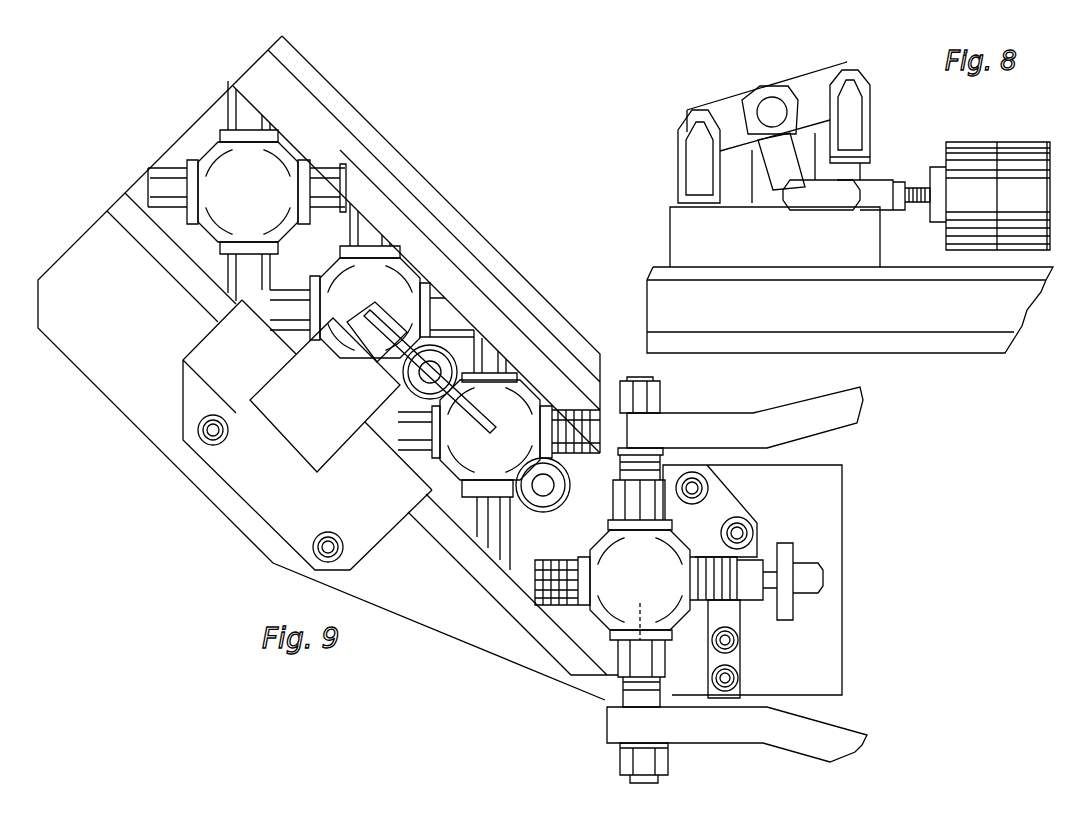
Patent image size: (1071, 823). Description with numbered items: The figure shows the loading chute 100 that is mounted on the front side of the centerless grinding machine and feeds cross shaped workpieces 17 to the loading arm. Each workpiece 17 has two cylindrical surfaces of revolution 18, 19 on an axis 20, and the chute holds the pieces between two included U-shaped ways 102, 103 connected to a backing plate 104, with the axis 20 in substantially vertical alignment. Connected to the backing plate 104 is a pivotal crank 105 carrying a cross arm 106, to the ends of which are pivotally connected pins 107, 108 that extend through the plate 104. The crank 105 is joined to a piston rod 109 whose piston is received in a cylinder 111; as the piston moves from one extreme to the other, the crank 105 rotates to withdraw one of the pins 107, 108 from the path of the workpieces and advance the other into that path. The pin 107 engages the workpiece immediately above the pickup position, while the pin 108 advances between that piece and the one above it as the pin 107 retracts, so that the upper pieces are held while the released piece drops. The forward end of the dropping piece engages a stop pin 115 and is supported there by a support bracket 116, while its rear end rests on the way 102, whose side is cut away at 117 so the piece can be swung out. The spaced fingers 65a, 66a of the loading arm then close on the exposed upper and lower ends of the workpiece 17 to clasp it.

In FIG. 9, the workpiece 17 is at (250, 226).
In FIG. 9, the cylindrical surface of revolution 18 is at (662, 668).
In FIG. 9, the cylindrical surface of revolution 19 is at (665, 507).
In FIG. 9, the axis 20 is at (641, 603).
In FIG. 9, the finger 65a is at (850, 393).
In FIG. 9, the finger 66a is at (790, 753).
In FIG. 8, the loading chute 100 is at (905, 355).
In FIG. 9, the loading chute 100 is at (58, 258).
In FIG. 9, the U-shaped way 102 is at (125, 197).
In FIG. 9, the U-shaped way 103 is at (243, 64).
In FIG. 9, the backing plate 104 is at (210, 107).
In FIG. 8, the pivotal crank 105 is at (770, 212).
In FIG. 8, the cross arm 106 is at (828, 65).
In FIG. 8, the pin 107 is at (682, 203).
In FIG. 9, the pin 107 is at (555, 483).
In FIG. 8, the pin 108 is at (865, 171).
In FIG. 9, the pin 108 is at (447, 407).
In FIG. 8, the piston rod 109 is at (860, 212).
In FIG. 8, the cylinder 111 is at (957, 140).
In FIG. 9, the stop pin 115 is at (762, 565).
In FIG. 9, the support bracket 116 is at (740, 663).
In FIG. 9, the cut away 117 is at (537, 607).